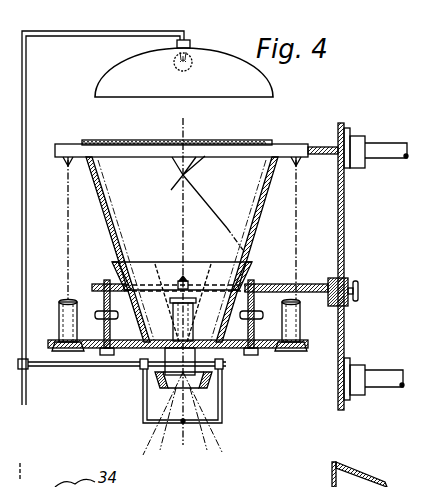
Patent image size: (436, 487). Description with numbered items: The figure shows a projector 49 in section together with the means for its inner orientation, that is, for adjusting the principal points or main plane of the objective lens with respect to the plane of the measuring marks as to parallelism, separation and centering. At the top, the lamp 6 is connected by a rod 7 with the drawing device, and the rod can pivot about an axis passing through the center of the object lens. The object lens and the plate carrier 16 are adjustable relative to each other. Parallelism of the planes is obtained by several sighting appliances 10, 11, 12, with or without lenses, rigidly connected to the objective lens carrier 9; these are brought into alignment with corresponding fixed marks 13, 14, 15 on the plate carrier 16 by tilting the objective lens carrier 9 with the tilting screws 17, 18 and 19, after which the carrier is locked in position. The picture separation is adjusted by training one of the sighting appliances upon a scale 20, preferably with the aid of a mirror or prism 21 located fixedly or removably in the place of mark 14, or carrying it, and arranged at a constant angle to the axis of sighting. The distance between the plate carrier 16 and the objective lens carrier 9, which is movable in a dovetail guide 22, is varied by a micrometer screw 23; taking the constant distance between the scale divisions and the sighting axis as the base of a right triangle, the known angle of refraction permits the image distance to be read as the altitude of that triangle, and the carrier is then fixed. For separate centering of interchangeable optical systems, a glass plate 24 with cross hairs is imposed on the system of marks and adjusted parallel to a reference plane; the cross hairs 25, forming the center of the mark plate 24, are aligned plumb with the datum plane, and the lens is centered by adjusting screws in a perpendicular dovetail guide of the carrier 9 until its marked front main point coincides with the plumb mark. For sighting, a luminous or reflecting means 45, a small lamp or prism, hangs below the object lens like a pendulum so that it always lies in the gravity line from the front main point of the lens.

The lamp 6 is at (192, 62).
The rod 7 is at (26, 218).
The objective lens carrier 9 is at (93, 349).
The sighting appliance 10 is at (60, 311).
The sighting appliance 11 is at (141, 344).
The sighting appliance 12 is at (300, 316).
The fixed mark 13 is at (65, 161).
The fixed mark 14 is at (176, 168).
The fixed mark 15 is at (297, 161).
The plate carrier 16 is at (291, 148).
The tilting screw 17 is at (100, 296).
The tilting screw 18 is at (176, 280).
The tilting screw 19 is at (260, 350).
The scale 20 is at (264, 283).
The mirror or prism 21 is at (190, 170).
The dovetail guide 22 is at (338, 225).
The micrometer screw 23 is at (359, 291).
The glass plate 24 is at (121, 137).
The cross hairs 25 is at (187, 146).
The luminous or reflecting means 45 is at (182, 421).
The projector 49 is at (113, 239).